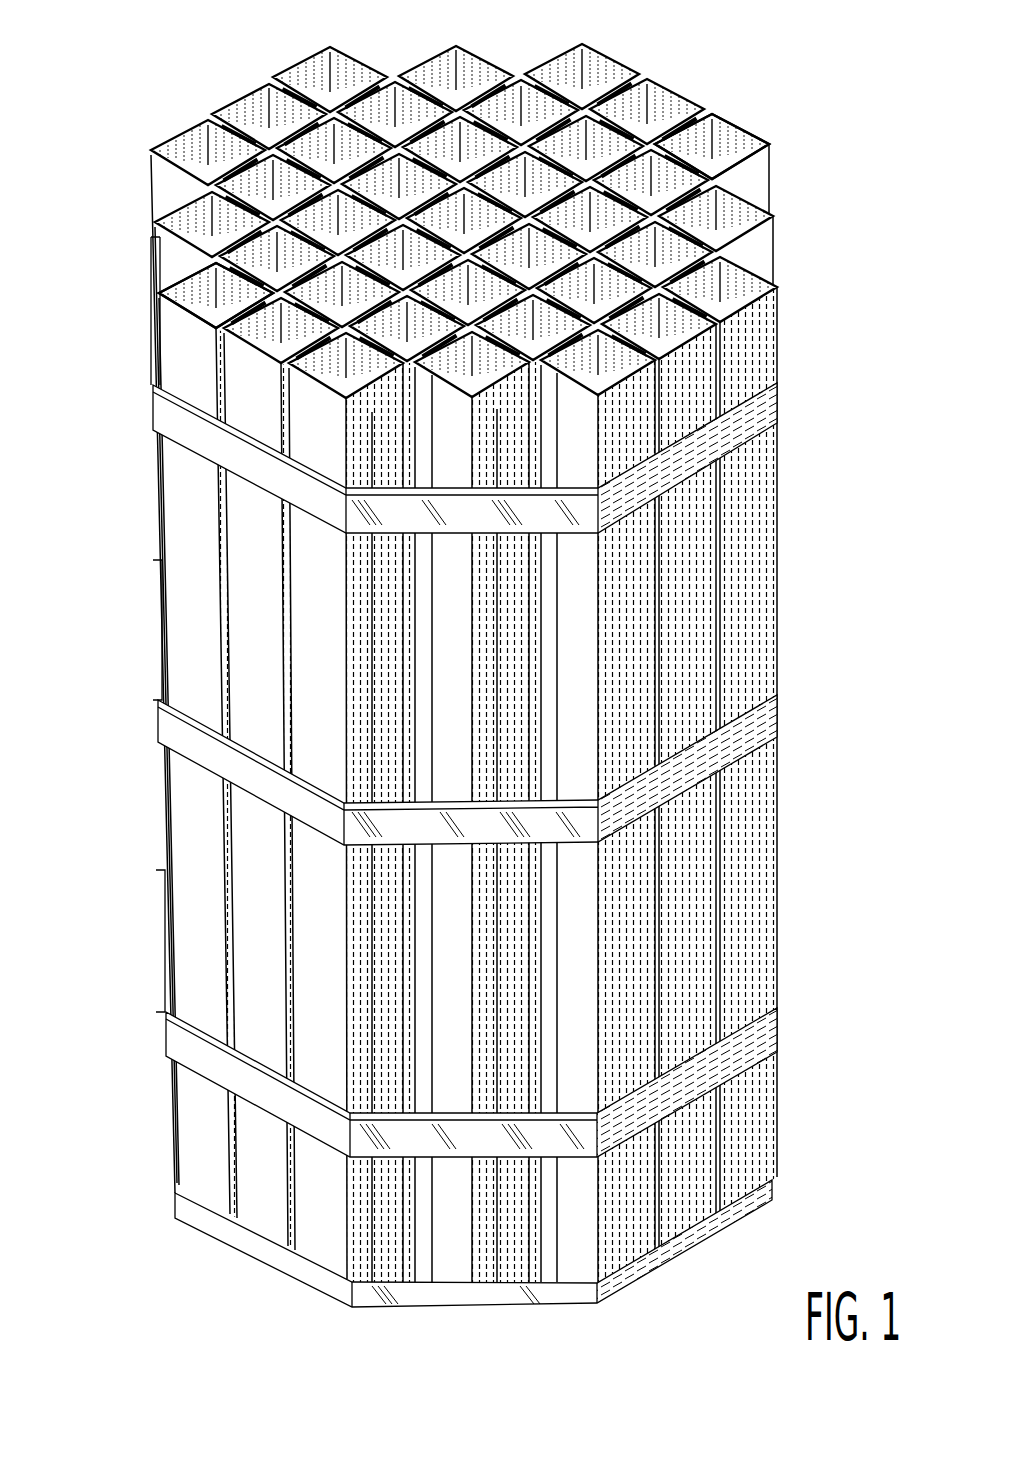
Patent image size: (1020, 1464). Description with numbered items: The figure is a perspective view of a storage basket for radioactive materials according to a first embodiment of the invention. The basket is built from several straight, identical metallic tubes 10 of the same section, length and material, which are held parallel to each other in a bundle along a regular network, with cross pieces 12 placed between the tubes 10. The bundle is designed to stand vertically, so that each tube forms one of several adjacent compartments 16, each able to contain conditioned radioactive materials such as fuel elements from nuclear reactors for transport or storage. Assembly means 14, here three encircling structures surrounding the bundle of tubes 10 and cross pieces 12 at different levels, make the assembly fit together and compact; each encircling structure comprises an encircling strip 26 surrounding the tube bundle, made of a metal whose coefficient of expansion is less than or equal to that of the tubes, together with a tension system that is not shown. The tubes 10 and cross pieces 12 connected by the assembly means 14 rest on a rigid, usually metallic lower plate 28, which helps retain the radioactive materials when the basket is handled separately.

The tubes 10 is at (283, 66).
The cross pieces 12 is at (521, 62).
The assembly means 14 is at (787, 425).
The compartments 16 is at (740, 152).
The encircling strip 26 is at (155, 428).
The lower plate 28 is at (230, 1228).